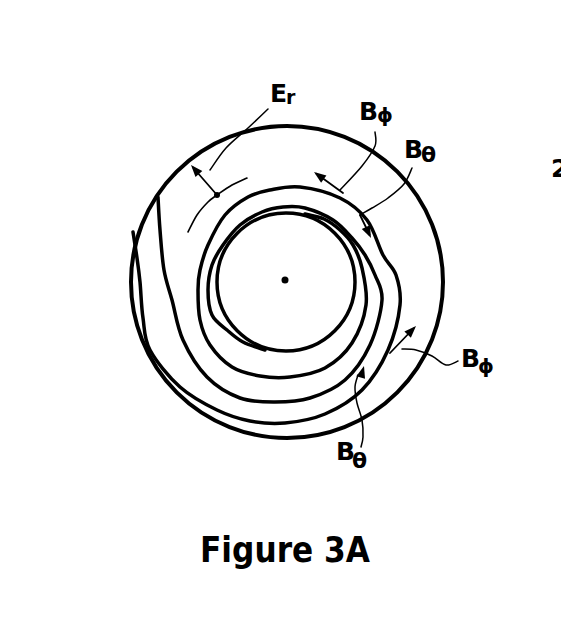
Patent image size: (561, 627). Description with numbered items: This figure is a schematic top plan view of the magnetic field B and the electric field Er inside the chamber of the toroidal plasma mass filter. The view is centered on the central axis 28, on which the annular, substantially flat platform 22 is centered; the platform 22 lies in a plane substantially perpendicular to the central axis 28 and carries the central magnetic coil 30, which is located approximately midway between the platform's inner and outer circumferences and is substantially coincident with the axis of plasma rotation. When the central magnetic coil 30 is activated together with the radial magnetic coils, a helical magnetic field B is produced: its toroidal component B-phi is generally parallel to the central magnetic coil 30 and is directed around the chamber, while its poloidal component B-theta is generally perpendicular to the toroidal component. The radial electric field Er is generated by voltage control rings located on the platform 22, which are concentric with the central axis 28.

The platform 22 is at (415, 247).
The central axis 28 is at (282, 281).
The central magnetic coil 30 is at (198, 210).